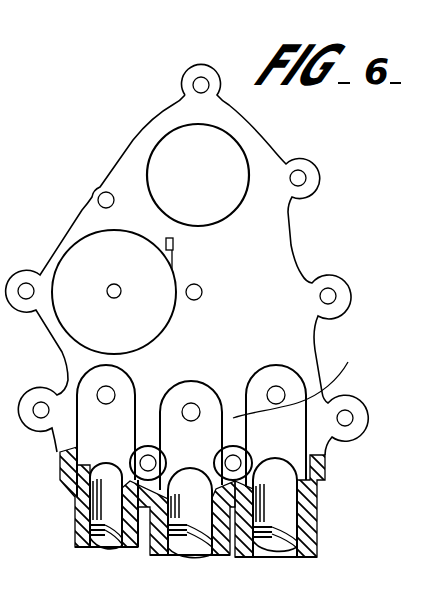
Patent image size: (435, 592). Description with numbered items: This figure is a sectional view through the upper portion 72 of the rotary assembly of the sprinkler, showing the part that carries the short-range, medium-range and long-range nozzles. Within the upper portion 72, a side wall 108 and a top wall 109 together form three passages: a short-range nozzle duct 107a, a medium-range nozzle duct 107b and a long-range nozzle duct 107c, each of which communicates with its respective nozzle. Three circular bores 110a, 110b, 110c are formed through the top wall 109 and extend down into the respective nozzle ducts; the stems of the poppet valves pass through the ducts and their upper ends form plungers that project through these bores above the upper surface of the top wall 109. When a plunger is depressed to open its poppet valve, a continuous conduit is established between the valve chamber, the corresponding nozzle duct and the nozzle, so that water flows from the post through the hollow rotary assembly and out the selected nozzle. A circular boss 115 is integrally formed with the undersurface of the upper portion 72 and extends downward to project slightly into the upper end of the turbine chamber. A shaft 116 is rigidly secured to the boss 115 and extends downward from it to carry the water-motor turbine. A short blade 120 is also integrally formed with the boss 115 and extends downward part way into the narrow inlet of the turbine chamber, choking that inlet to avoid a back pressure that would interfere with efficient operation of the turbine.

The upper portion 72 is at (299, 245).
The circular boss 115 is at (147, 322).
The shaft 116 is at (117, 284).
The short blade 120 is at (174, 244).
The short-range nozzle duct 107a is at (120, 447).
The medium-range nozzle duct 107b is at (296, 446).
The long-range nozzle duct 107c is at (212, 449).
The side wall 108 is at (148, 405).
The top wall 109 is at (56, 392).
The circular bore 110a is at (77, 392).
The circular bore 110b is at (283, 388).
The circular bore 110c is at (193, 403).